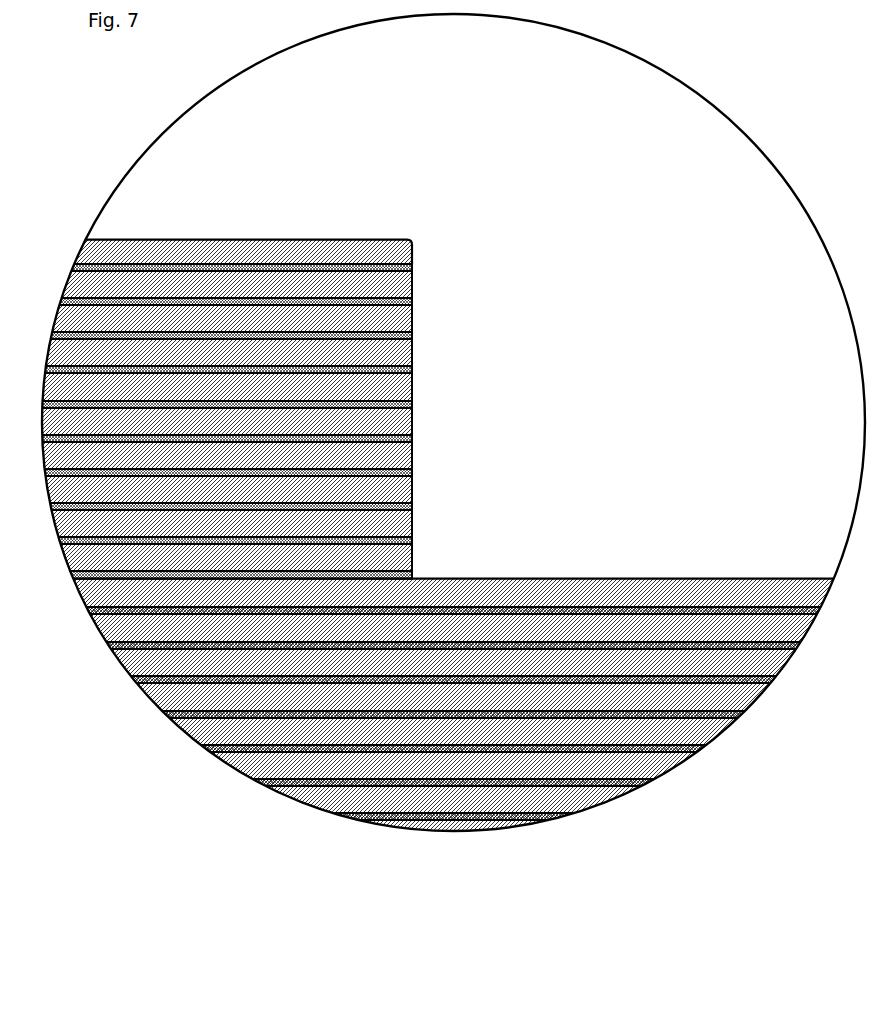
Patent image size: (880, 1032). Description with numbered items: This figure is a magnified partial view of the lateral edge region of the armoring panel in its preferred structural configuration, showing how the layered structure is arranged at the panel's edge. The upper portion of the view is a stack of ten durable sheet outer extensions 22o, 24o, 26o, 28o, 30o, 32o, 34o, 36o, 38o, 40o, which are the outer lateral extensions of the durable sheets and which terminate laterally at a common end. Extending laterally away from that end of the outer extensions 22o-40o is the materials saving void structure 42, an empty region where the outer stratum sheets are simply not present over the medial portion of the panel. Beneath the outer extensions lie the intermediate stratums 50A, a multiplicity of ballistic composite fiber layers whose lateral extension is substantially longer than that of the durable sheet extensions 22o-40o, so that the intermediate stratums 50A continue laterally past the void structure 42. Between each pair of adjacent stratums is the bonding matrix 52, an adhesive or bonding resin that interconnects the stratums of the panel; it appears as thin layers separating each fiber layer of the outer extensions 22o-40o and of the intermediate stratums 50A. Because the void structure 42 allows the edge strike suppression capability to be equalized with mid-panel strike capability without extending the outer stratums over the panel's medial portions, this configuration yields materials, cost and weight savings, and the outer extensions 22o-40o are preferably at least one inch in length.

The durable sheet outer extension 22o is at (133, 243).
The durable sheet outer extension 24o is at (197, 277).
The durable sheet outer extension 26o is at (232, 308).
The durable sheet outer extension 28o is at (262, 345).
The durable sheet outer extension 30o is at (309, 377).
The durable sheet outer extension 32o is at (338, 415).
The durable sheet outer extension 34o is at (352, 447).
The durable sheet outer extension 36o is at (365, 483).
The durable sheet outer extension 38o is at (372, 517).
The durable sheet outer extension 40o is at (378, 549).
The materials saving void structure 42 is at (627, 390).
The intermediate stratums 50A is at (472, 620).
The bonding matrix 52 is at (153, 393).